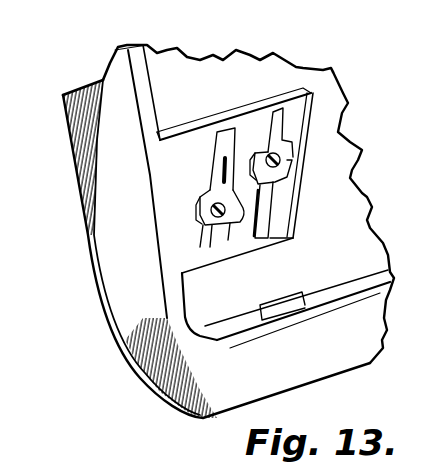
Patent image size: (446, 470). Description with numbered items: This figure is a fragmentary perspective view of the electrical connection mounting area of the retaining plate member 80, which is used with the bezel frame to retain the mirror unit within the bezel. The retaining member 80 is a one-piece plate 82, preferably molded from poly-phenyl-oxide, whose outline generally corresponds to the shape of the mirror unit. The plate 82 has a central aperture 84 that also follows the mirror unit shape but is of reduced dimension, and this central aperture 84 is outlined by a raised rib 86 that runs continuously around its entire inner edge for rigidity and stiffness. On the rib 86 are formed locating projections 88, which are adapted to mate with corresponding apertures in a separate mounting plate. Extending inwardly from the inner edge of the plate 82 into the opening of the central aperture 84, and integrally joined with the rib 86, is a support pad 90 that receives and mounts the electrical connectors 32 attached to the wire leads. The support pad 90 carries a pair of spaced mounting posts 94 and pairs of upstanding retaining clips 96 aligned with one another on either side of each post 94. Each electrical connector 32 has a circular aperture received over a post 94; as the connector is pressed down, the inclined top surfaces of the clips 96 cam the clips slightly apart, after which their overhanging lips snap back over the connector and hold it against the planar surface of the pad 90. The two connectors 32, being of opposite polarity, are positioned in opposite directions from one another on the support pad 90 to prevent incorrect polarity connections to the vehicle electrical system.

The retaining plate member 80 is at (108, 330).
The one-piece plate 82 is at (173, 362).
The central aperture 84 is at (192, 300).
The raised rib 86 is at (140, 78).
The locating projections 88 is at (298, 290).
The support pad 90 is at (287, 205).
The electrical connectors 32 is at (217, 153).
The mounting posts 94 is at (200, 237).
The retaining clips 96 is at (200, 237).